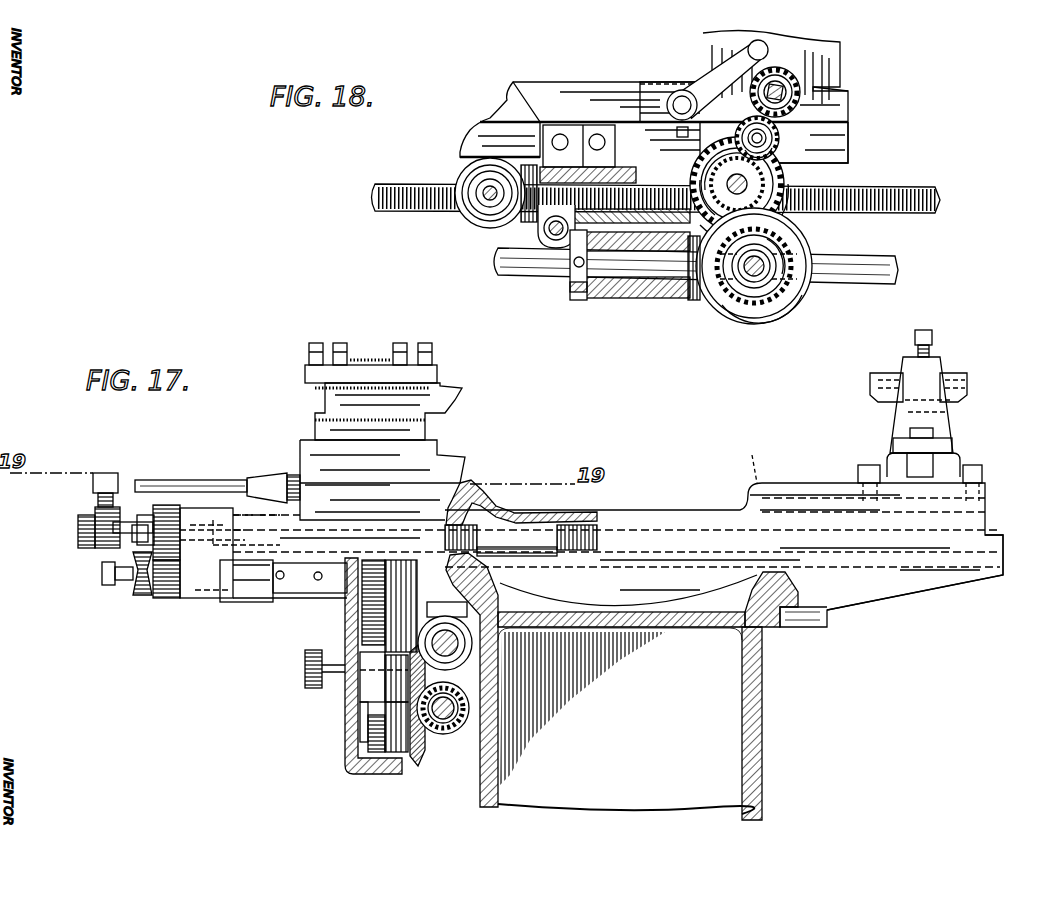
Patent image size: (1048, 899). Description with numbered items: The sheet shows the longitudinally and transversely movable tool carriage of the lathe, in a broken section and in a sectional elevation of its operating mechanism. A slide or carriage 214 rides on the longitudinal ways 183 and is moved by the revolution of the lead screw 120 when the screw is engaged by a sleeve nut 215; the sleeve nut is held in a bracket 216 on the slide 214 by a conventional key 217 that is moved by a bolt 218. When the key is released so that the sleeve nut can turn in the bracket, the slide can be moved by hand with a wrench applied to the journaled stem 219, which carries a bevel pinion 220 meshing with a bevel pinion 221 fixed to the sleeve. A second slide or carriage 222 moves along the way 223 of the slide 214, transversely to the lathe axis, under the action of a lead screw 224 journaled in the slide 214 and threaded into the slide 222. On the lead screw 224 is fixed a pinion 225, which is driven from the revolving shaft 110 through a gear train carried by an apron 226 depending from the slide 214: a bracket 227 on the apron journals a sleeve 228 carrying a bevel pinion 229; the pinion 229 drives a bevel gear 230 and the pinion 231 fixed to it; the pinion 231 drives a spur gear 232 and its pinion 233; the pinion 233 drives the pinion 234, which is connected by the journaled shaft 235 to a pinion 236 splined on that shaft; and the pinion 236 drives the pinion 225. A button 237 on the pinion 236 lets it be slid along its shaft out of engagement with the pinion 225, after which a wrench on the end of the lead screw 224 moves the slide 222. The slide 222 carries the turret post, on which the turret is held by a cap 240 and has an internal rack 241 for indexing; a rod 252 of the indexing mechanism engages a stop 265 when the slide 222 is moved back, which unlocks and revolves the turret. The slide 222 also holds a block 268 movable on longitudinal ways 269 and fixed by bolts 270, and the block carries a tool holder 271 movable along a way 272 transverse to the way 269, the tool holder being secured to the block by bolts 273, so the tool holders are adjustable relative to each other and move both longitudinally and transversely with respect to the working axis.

In FIG. 18, the revolving shaft 110 is at (512, 278).
In FIG. 17, the revolving shaft 110 is at (460, 708).
In FIG. 18, the lead screw 120 is at (390, 211).
In FIG. 17, the lead screw 120 is at (458, 636).
In FIG. 17, the longitudinal ways 183 is at (493, 563).
In FIG. 18, the slide or carriage 214 is at (848, 148).
In FIG. 17, the slide or carriage 214 is at (895, 595).
In FIG. 18, the sleeve nut 215 is at (583, 125).
In FIG. 18, the bracket 216 is at (608, 219).
In FIG. 18, the key 217 is at (540, 230).
In FIG. 18, the bolt 218 is at (556, 242).
In FIG. 17, the bolt 218 is at (303, 669).
In FIG. 18, the journaled stem 219 is at (485, 187).
In FIG. 18, the bevel pinion 220 is at (475, 163).
In FIG. 18, the bevel pinion 221 is at (537, 167).
In FIG. 18, the slide or carriage 222 is at (840, 55).
In FIG. 17, the slide or carriage 222 is at (405, 470).
In FIG. 18, the way 223 is at (848, 93).
In FIG. 18, the lead screw 224 is at (773, 90).
In FIG. 17, the lead screw 224 is at (135, 520).
In FIG. 18, the pinion 225 is at (796, 85).
In FIG. 17, the pinion 225 is at (168, 505).
In FIG. 17, the apron 226 is at (345, 745).
In FIG. 18, the bracket 227 is at (628, 300).
In FIG. 17, the bracket 227 is at (434, 745).
In FIG. 18, the sleeve 228 is at (583, 290).
In FIG. 17, the sleeve 228 is at (470, 718).
In FIG. 18, the bevel pinion 229 is at (700, 293).
In FIG. 17, the bevel pinion 229 is at (450, 738).
In FIG. 18, the bevel gear 230 is at (746, 320).
In FIG. 17, the bevel gear 230 is at (416, 770).
In FIG. 18, the pinion 231 is at (775, 287).
In FIG. 17, the pinion 231 is at (400, 708).
In FIG. 18, the spur gear 232 is at (760, 212).
In FIG. 17, the spur gear 232 is at (375, 670).
In FIG. 18, the pinion 233 is at (767, 173).
In FIG. 17, the pinion 233 is at (362, 630).
In FIG. 17, the pinion 234 is at (345, 598).
In FIG. 18, the journaled shaft 235 is at (772, 146).
In FIG. 17, the journaled shaft 235 is at (110, 586).
In FIG. 18, the pinion 236 is at (783, 138).
In FIG. 17, the pinion 236 is at (170, 598).
In FIG. 18, the button 237 is at (773, 127).
In FIG. 17, the button 237 is at (140, 596).
In FIG. 17, the cap 240 is at (370, 352).
In FIG. 17, the internal rack 241 is at (310, 440).
In FIG. 17, the rod 252 is at (232, 482).
In FIG. 18, the stop 265 is at (718, 65).
In FIG. 17, the stop 265 is at (115, 473).
In FIG. 17, the block 268 is at (945, 465).
In FIG. 17, the longitudinal ways 269 is at (748, 458).
In FIG. 17, the bolts 270 is at (855, 478).
In FIG. 17, the tool holder 271 is at (930, 385).
In FIG. 17, the way 272 is at (905, 462).
In FIG. 17, the bolts 273 is at (935, 436).